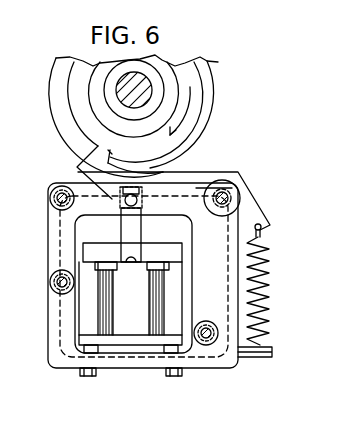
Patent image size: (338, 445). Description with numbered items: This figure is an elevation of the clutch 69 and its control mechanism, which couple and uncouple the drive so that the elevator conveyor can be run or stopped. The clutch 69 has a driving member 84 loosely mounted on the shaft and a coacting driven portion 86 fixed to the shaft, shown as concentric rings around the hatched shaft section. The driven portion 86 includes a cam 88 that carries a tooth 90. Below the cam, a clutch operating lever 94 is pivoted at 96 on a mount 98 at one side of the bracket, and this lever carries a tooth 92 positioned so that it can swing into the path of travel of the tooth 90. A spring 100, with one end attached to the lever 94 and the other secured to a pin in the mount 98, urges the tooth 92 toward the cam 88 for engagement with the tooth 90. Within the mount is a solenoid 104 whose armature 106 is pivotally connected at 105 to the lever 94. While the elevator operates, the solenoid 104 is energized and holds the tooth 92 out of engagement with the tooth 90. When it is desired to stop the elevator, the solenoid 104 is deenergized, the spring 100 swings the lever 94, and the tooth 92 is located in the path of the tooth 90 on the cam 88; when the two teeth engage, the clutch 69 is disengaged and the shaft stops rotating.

The driving member 84 is at (60, 78).
The driven portion 86 is at (167, 73).
The cam 88 is at (205, 80).
The clutch 69 is at (81, 114).
The tooth 92 is at (92, 150).
The tooth 90 is at (113, 151).
The clutch operating lever 94 is at (216, 172).
The pivot 96 is at (231, 195).
The mount 98 is at (66, 222).
The spring 100 is at (270, 312).
The solenoid 104 is at (138, 322).
The pivotal connection 105 is at (124, 208).
The armature 106 is at (137, 232).